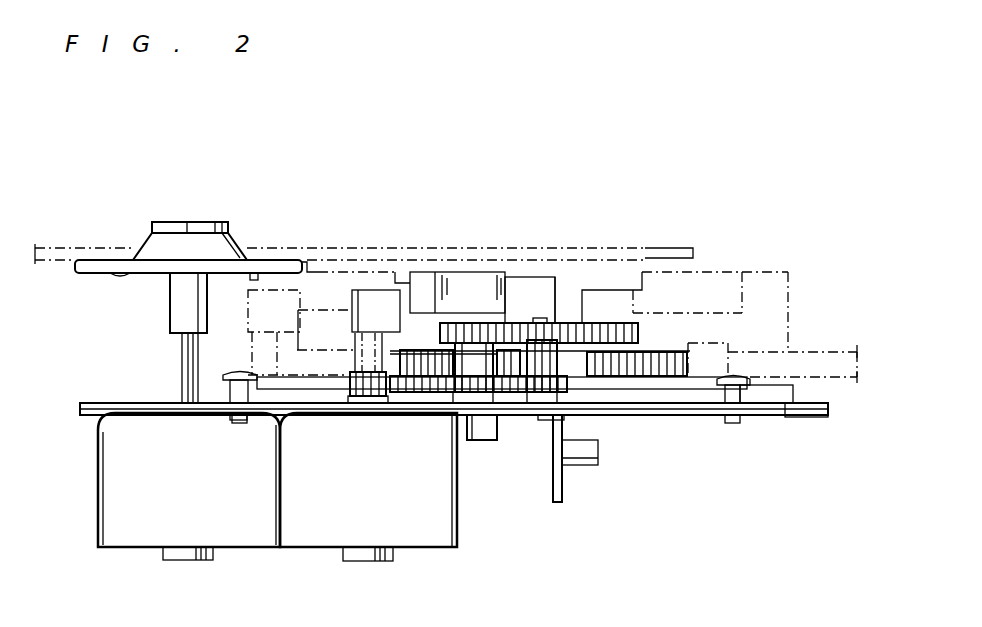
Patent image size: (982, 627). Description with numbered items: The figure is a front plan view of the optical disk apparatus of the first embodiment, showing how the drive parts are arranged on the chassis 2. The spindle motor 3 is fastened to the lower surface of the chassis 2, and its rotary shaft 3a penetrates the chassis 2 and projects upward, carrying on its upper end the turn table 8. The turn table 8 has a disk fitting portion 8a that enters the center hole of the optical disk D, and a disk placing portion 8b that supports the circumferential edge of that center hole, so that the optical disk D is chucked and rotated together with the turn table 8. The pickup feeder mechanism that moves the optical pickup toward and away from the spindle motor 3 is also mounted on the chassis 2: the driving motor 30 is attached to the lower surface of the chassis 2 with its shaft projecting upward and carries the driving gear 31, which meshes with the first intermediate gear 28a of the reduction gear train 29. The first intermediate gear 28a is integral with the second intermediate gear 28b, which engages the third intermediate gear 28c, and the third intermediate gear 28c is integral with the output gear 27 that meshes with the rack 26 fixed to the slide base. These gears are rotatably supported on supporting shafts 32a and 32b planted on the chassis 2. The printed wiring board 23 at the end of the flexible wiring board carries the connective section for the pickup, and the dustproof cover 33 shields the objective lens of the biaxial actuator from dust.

The chassis 2 is at (773, 414).
The spindle motor 3 is at (138, 535).
The rotary shaft 3a is at (183, 360).
The turn table 8 is at (196, 199).
The disk fitting portion 8a is at (190, 209).
The disk placing portion 8b is at (97, 260).
The optical disk D is at (342, 248).
The printed wiring board 23 is at (565, 487).
The rack 26 is at (593, 367).
The output gear 27 is at (565, 360).
The first intermediate gear 28a is at (447, 383).
The second intermediate gear 28b is at (470, 345).
The third intermediate gear 28c is at (607, 323).
The reduction gear train 29 is at (566, 298).
The driving motor 30 is at (318, 525).
The driving gear 31 is at (352, 372).
The supporting shaft 32a is at (477, 416).
The supporting shaft 32b is at (542, 395).
The dustproof cover 33 is at (395, 272).